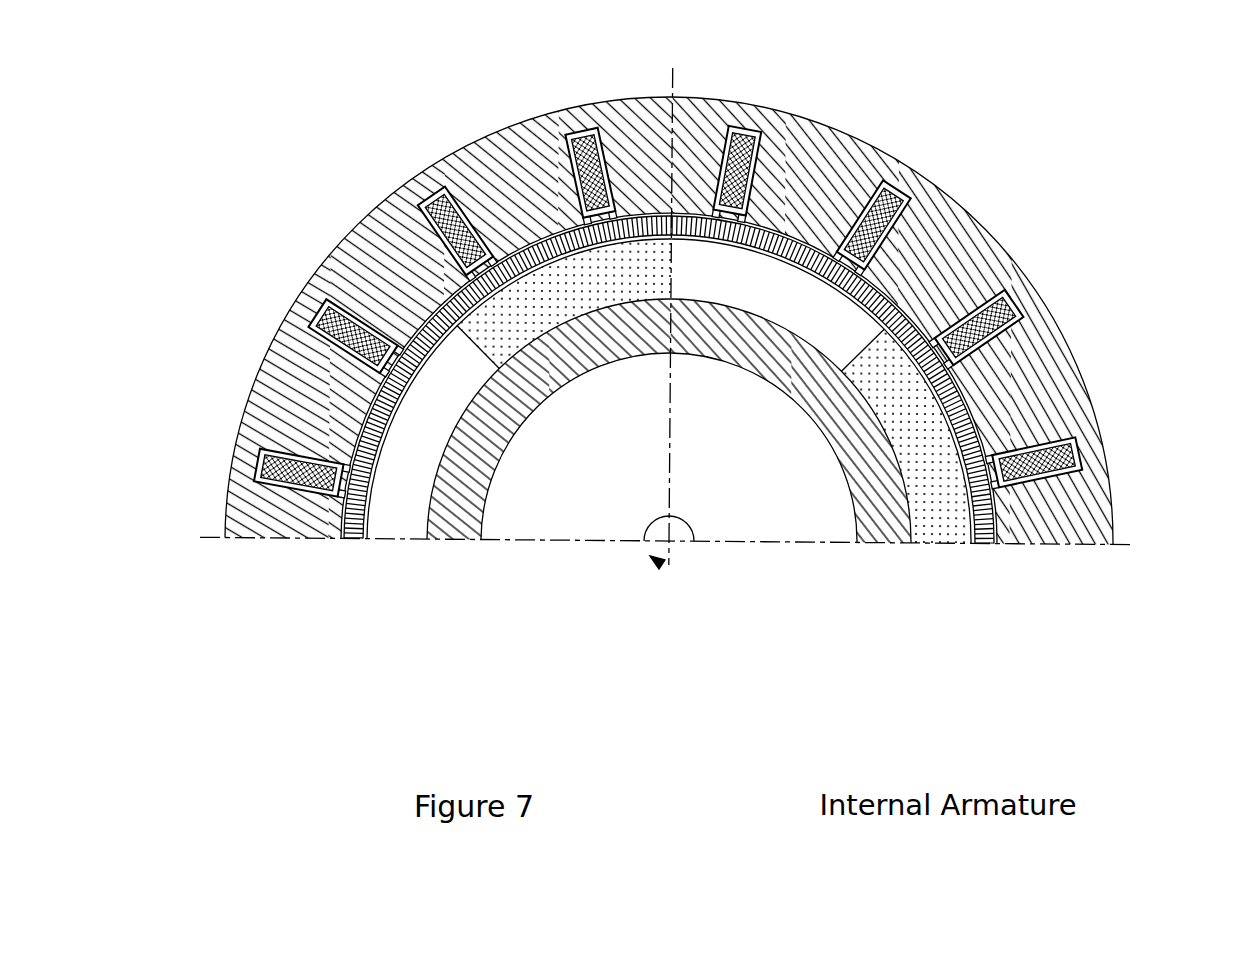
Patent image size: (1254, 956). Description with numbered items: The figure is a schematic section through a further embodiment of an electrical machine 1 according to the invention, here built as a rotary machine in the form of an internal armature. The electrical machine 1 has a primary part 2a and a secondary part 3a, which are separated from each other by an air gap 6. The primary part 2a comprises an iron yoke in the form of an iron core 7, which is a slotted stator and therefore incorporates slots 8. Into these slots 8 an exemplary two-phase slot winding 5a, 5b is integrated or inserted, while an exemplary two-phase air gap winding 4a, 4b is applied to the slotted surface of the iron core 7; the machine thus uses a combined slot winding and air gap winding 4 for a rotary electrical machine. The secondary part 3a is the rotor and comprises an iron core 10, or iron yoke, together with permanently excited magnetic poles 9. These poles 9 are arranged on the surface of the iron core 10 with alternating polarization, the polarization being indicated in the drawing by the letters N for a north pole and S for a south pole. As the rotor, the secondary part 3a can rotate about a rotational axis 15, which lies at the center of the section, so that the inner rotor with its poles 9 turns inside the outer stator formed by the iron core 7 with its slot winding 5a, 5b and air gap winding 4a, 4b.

The electrical machine 1 is at (646, 316).
The primary part 2a is at (226, 546).
The secondary part 3a is at (481, 545).
The air gap winding 4 is at (975, 541).
The air gap winding phase 4a is at (613, 243).
The air gap winding phase 4b is at (722, 243).
The slot winding phase 5a is at (563, 138).
The slot winding phase 5b is at (765, 152).
The air gap 6 is at (367, 545).
The iron core 7 is at (1048, 398).
The slots 8 is at (318, 472).
The permanently excited magnetic poles 9 is at (971, 541).
The iron core 10 is at (858, 541).
The rotational axis 15 is at (650, 562).